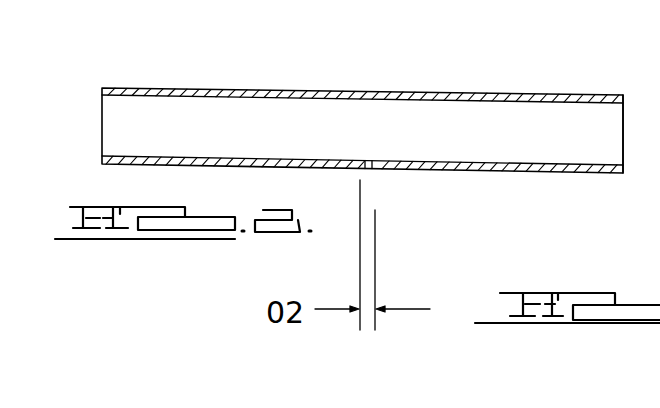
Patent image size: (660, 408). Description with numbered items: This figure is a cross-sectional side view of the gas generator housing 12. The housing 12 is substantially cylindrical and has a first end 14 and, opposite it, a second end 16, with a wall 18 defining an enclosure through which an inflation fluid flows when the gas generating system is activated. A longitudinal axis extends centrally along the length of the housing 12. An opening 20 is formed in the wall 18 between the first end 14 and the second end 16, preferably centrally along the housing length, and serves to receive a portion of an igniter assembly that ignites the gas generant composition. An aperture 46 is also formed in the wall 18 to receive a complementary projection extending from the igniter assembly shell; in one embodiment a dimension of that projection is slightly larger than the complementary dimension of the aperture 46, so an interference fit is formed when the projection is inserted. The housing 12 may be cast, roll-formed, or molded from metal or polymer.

The housing 12 is at (88, 98).
The first end 14 is at (117, 168).
The second end 16 is at (548, 93).
The wall 18 is at (250, 89).
The opening 20 is at (358, 91).
The aperture 46 is at (370, 168).